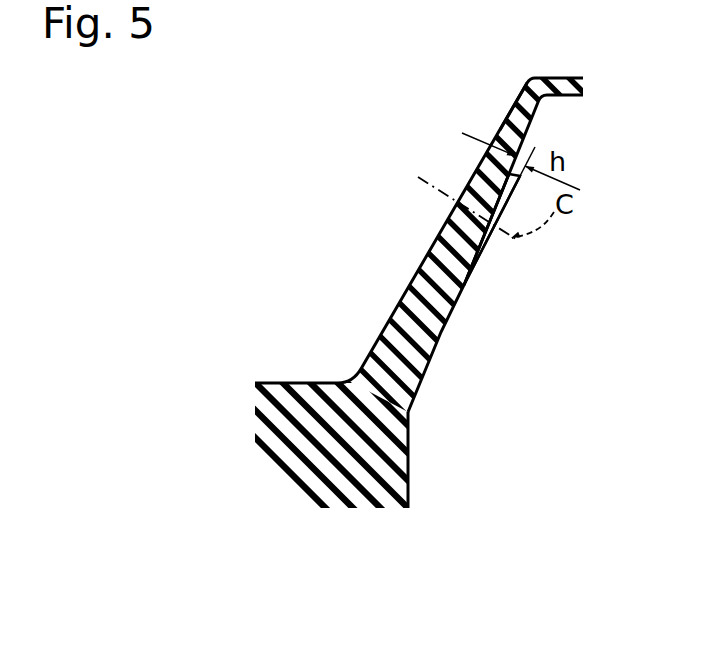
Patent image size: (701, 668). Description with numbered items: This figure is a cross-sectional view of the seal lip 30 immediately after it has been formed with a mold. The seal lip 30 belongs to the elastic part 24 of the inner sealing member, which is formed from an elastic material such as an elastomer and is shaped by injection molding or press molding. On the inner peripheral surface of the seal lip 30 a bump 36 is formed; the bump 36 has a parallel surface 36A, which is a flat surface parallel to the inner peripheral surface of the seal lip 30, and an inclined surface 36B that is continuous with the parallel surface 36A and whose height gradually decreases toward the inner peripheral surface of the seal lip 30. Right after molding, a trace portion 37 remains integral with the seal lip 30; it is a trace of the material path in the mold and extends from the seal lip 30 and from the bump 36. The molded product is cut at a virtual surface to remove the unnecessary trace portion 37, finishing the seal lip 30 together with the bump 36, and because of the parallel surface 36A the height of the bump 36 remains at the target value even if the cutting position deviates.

The elastic part 24 is at (286, 383).
The seal lip 30 is at (419, 268).
The bump 36 is at (466, 286).
The parallel surface 36A is at (484, 246).
The inclined surface 36B is at (468, 280).
The trace portion 37 is at (500, 130).